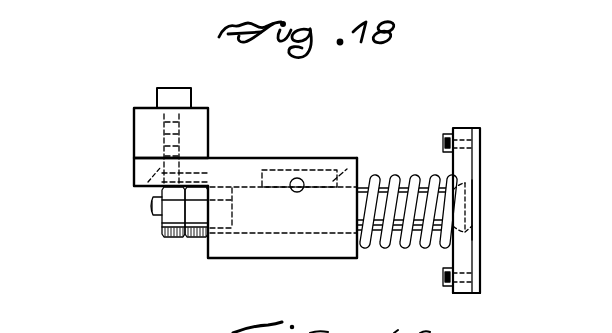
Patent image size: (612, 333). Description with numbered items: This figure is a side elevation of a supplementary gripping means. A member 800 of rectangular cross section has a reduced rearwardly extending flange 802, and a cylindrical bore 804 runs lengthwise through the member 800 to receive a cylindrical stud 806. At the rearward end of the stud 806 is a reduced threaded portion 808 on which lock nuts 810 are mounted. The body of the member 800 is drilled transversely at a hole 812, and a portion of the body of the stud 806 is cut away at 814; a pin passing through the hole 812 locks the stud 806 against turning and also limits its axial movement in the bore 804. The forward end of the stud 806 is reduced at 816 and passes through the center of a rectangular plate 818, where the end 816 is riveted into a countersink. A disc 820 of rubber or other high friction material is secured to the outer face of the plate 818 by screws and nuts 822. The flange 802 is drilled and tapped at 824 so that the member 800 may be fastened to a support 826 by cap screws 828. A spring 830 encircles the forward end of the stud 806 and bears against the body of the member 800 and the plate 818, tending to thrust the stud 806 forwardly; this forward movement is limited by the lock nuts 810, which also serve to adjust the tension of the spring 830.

The member 800 is at (292, 149).
The reduced rearwardly extending flange 802 is at (134, 168).
The cylindrical bore 804 is at (293, 236).
The cylindrical stud 806 is at (393, 242).
The reduced threaded portion 808 is at (150, 207).
The lock nuts 810 is at (195, 238).
The transverse hole 812 is at (303, 180).
The cut-away portion of stud 814 is at (358, 170).
The reduced forward end of stud 816 is at (478, 178).
The rectangular plate 818 is at (462, 288).
The disc of high friction material 820 is at (478, 248).
The screws and nuts 822 is at (443, 142).
The drilled and tapped hole 824 is at (140, 188).
The support 826 is at (134, 136).
The cap screws 828 is at (182, 97).
The spring 830 is at (427, 207).